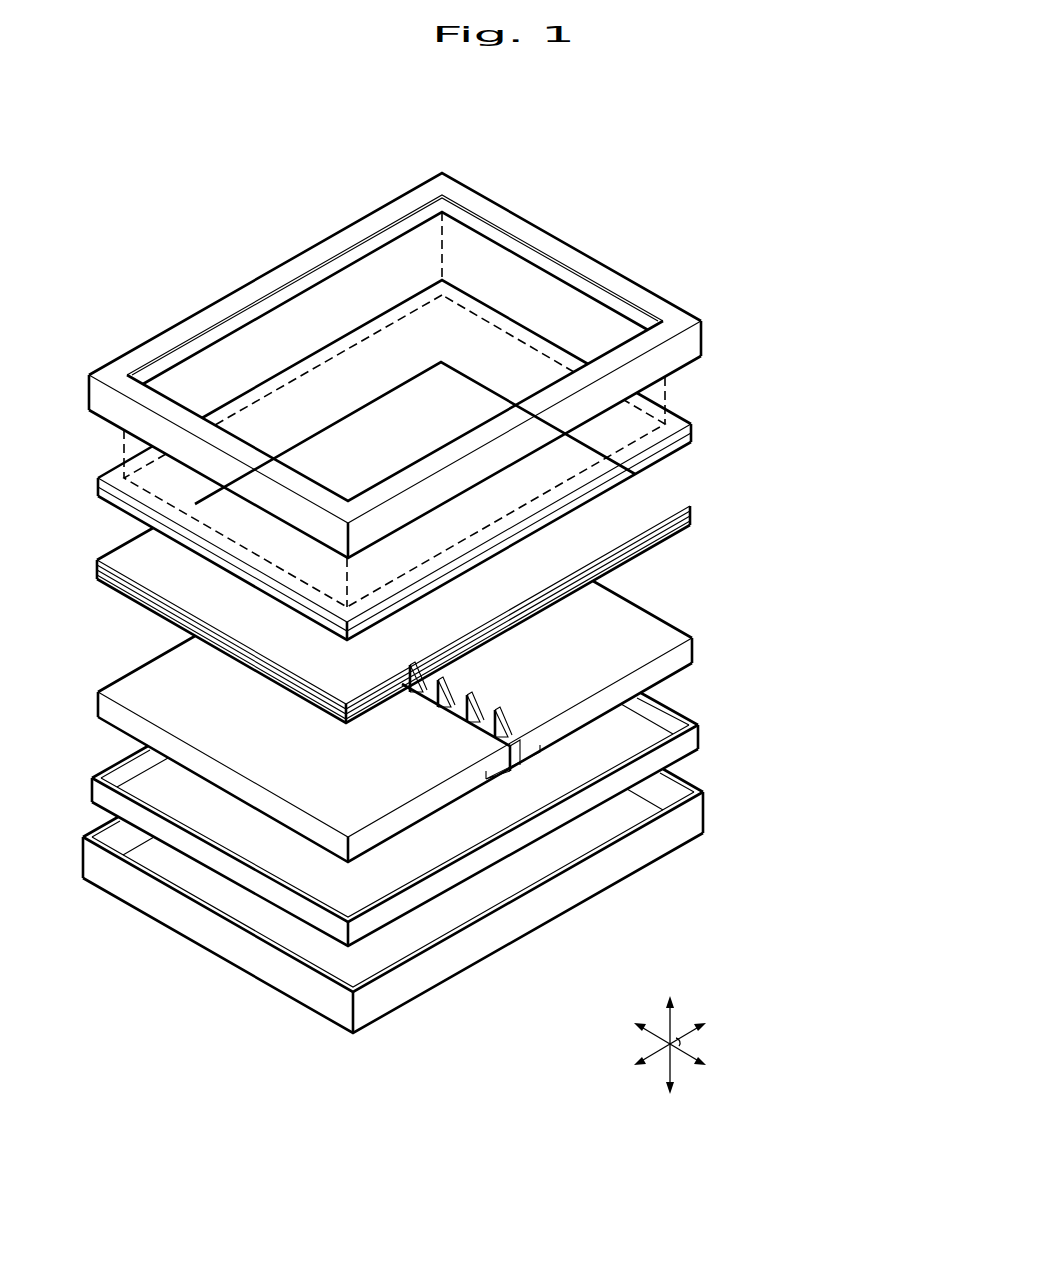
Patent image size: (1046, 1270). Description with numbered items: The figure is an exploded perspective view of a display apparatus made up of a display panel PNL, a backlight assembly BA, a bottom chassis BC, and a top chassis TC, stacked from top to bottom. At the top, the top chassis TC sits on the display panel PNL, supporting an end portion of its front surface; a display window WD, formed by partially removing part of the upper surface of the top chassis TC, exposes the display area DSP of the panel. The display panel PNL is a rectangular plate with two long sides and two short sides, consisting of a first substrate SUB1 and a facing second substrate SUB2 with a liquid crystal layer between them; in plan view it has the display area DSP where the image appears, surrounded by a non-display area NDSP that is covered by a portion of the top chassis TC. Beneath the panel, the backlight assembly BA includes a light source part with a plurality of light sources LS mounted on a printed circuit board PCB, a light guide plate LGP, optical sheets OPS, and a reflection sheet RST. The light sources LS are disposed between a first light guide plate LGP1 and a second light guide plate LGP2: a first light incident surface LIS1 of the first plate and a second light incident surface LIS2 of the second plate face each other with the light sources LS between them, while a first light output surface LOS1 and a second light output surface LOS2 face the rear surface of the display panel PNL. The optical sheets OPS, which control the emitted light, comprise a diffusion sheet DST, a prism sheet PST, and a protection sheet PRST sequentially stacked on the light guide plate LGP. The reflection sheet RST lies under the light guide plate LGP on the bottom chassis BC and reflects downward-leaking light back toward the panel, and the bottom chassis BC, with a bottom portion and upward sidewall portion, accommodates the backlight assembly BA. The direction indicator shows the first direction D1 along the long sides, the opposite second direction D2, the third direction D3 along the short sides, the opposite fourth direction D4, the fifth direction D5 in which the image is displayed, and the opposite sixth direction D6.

The display window WD is at (527, 290).
The top chassis TC is at (693, 343).
The display area DSP is at (365, 368).
The non-display area NDSP is at (665, 392).
The display panel PNL is at (786, 414).
The first substrate SUB1 is at (692, 438).
The second substrate SUB2 is at (692, 430).
The backlight assembly BA is at (830, 484).
The optical sheets OPS is at (788, 486).
The protection sheet PRST is at (690, 508).
The prism sheet PST is at (690, 513).
The diffusion sheet DST is at (690, 519).
The light guide plate LGP is at (790, 648).
The first light guide plate LGP1 is at (460, 791).
The second light guide plate LGP2 is at (678, 660).
The first light output surface LOS1 is at (151, 683).
The second light output surface LOS2 is at (624, 617).
The light sources LS is at (446, 681).
The printed circuit board PCB is at (527, 767).
The first light incident surface LIS1 is at (493, 737).
The second light incident surface LIS2 is at (508, 728).
The reflection sheet RST is at (690, 736).
The bottom chassis BC is at (690, 816).
The first direction D1 is at (635, 1062).
The second direction D2 is at (706, 1026).
The third direction D3 is at (635, 1026).
The fourth direction D4 is at (706, 1062).
The fifth direction D5 is at (670, 1007).
The sixth direction D6 is at (670, 1083).